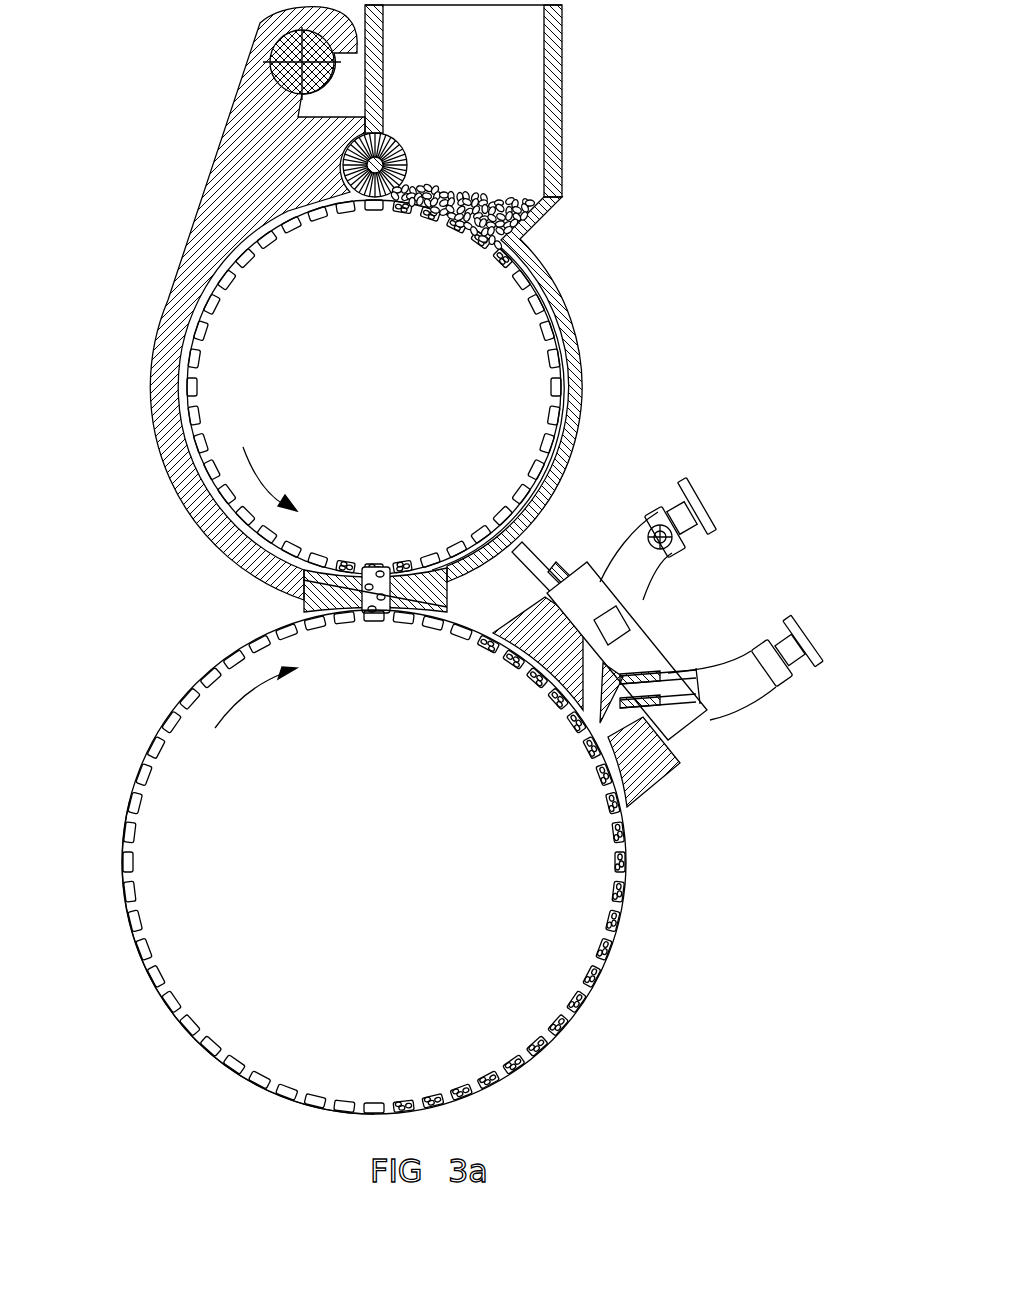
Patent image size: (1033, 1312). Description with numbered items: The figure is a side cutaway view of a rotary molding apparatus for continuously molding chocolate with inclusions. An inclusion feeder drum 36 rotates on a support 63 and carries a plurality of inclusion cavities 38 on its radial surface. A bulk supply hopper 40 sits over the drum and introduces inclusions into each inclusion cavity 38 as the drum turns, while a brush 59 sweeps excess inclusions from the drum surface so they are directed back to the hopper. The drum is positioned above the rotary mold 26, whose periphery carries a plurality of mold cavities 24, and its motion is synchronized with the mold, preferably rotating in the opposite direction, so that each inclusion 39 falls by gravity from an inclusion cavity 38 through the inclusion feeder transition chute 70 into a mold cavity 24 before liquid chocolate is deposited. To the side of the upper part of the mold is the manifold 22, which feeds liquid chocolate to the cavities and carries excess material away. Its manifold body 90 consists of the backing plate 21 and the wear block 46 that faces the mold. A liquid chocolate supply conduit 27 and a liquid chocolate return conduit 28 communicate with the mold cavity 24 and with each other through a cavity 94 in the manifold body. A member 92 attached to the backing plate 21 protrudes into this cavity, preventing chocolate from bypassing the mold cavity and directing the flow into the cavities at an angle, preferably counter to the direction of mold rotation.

The backing plate 21 is at (742, 737).
The manifold 22 is at (902, 766).
The mold cavity 24 is at (180, 1028).
The rotary mold 26 is at (541, 900).
The liquid chocolate supply conduit 27 is at (823, 613).
The liquid chocolate return conduit 28 is at (700, 506).
The inclusion feeder drum 36 is at (506, 412).
The inclusion cavity 38 is at (528, 293).
The inclusion 39 is at (303, 580).
The bulk supply hopper 40 is at (506, 114).
The wear block 46 is at (689, 779).
The brush 59 is at (347, 160).
The support 63 is at (280, 53).
The inclusion feeder transition chute 70 is at (448, 614).
The manifold body 90 is at (766, 802).
The member 92 is at (626, 700).
The cavity 94 is at (628, 668).